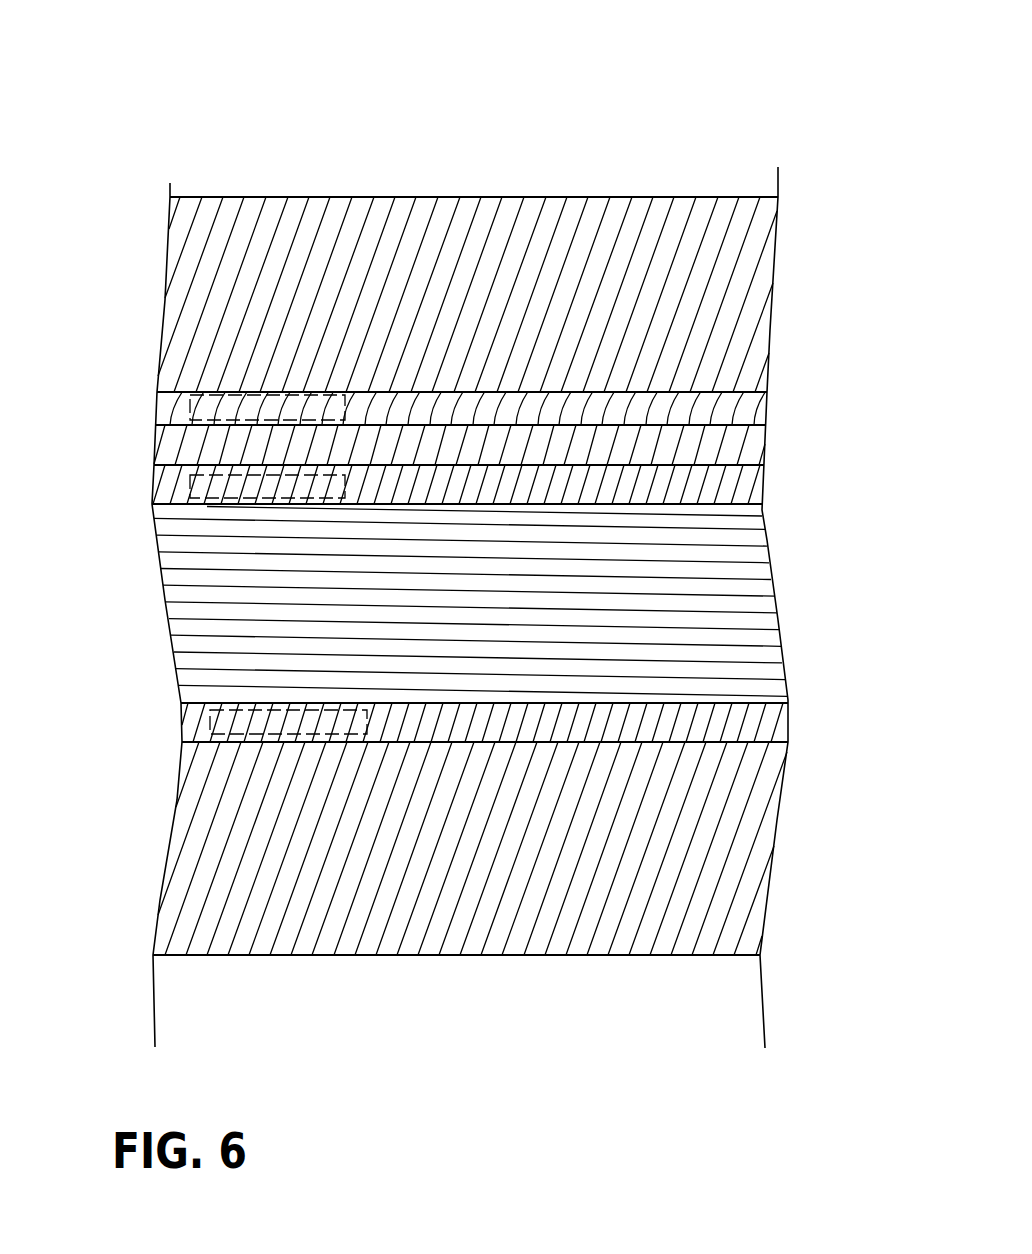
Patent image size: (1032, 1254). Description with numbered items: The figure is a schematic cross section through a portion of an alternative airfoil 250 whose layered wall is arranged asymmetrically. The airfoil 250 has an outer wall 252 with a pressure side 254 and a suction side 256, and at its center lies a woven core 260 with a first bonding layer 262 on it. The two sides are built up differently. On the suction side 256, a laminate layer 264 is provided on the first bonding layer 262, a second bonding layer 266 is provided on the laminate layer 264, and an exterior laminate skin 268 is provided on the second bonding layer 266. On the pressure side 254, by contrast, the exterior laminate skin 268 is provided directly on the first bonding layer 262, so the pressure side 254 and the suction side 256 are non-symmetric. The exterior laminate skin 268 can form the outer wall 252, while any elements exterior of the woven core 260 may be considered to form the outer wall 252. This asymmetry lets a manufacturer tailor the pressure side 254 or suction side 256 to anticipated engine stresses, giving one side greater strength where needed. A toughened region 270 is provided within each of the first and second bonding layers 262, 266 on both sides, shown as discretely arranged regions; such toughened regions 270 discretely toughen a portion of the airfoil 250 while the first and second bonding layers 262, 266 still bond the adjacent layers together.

The airfoil 250 is at (197, 147).
The outer wall 252 is at (671, 217).
The pressure side 254 is at (295, 957).
The suction side 256 is at (352, 197).
The woven core 260 is at (675, 592).
The first bonding layer 262 is at (697, 492).
The laminate layer 264 is at (722, 453).
The second bonding layer 266 is at (735, 408).
The exterior laminate skin 268 is at (735, 345).
The toughened region 270 is at (187, 410).